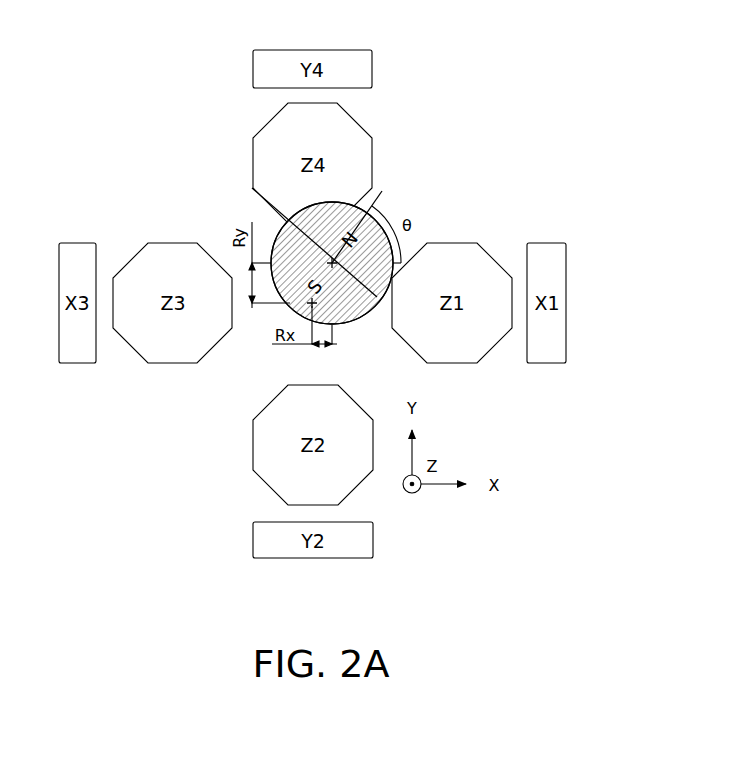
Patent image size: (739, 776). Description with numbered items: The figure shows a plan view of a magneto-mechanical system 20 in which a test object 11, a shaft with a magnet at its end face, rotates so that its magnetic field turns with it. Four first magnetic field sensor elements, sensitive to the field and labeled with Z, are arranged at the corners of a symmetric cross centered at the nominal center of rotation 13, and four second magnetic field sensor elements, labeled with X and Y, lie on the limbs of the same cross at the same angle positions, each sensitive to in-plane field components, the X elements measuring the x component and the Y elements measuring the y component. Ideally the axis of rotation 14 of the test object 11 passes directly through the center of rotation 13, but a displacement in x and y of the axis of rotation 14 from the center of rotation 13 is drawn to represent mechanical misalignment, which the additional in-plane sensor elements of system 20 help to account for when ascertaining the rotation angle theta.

The test object 11 is at (383, 190).
The center of rotation 13 is at (305, 305).
The axis of rotation 14 is at (292, 230).
The magneto-mechanical system 20 is at (488, 69).